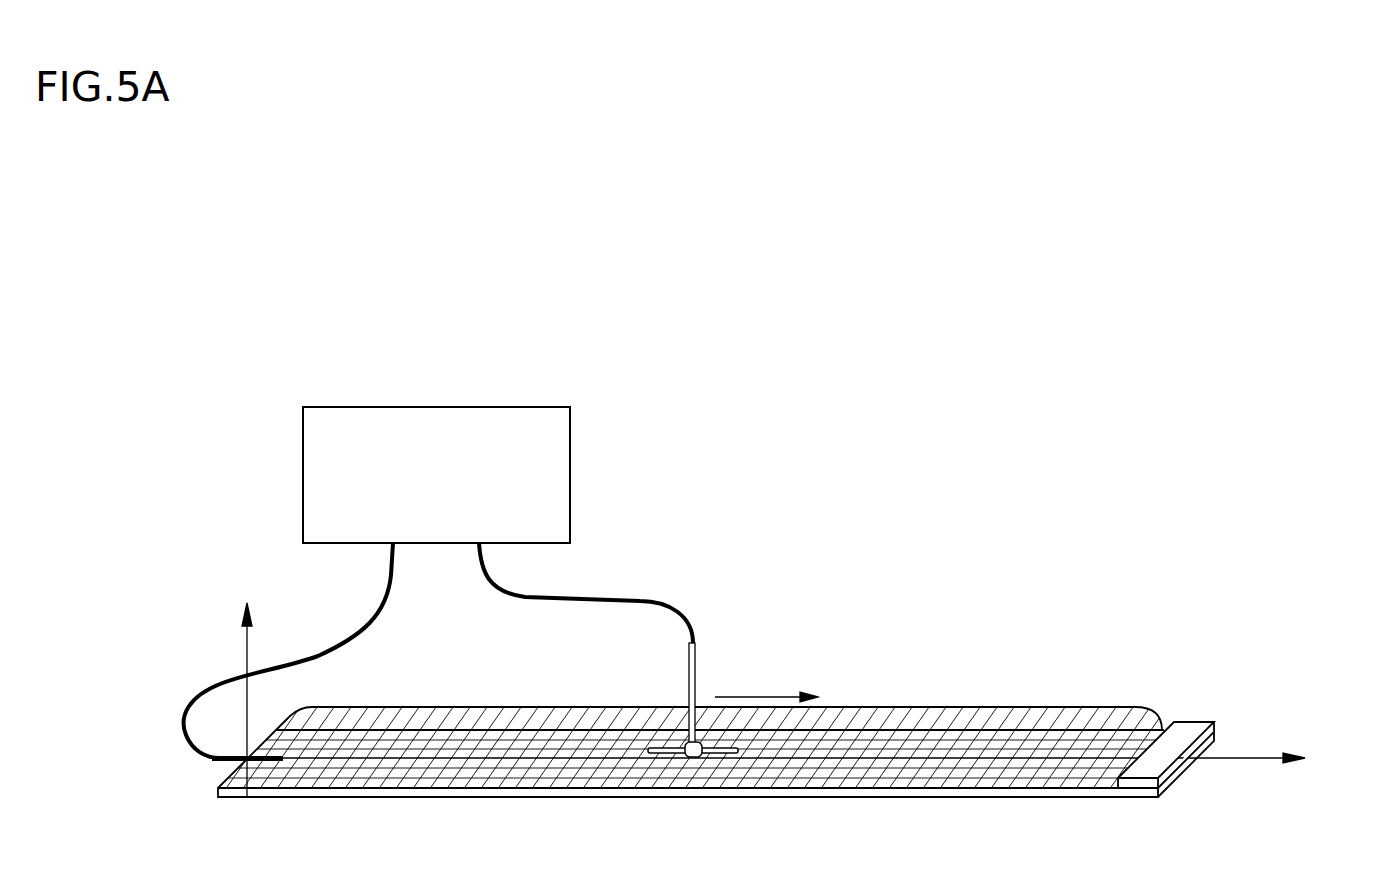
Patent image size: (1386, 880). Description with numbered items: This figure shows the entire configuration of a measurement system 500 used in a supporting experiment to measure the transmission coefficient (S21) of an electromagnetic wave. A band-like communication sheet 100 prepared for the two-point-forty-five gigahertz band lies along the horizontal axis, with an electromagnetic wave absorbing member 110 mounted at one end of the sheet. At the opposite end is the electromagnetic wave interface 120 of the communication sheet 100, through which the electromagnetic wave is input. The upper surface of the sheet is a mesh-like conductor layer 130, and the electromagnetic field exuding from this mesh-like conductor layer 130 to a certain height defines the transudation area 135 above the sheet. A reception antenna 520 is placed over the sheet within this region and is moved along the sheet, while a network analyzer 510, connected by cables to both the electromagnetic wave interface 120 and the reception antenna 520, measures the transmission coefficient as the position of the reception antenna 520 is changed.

The measurement system 500 is at (884, 381).
The network analyzer 510 is at (437, 407).
The reception antenna 520 is at (672, 746).
The communication sheet 100 is at (970, 717).
The electromagnetic wave absorbing member 110 is at (1188, 720).
The electromagnetic wave interface 120 is at (268, 763).
The mesh-like conductor layer 130 is at (477, 725).
The transudation area 135 is at (857, 718).